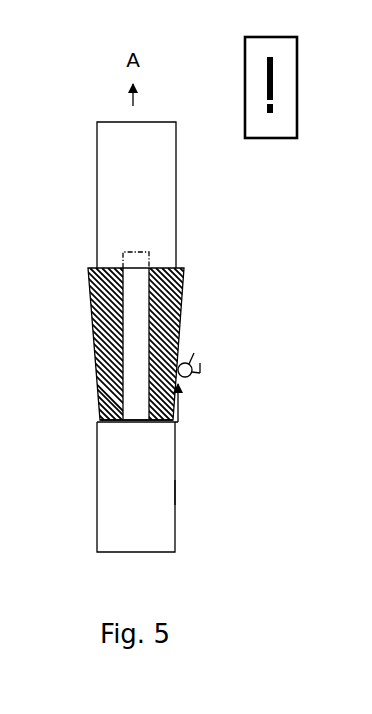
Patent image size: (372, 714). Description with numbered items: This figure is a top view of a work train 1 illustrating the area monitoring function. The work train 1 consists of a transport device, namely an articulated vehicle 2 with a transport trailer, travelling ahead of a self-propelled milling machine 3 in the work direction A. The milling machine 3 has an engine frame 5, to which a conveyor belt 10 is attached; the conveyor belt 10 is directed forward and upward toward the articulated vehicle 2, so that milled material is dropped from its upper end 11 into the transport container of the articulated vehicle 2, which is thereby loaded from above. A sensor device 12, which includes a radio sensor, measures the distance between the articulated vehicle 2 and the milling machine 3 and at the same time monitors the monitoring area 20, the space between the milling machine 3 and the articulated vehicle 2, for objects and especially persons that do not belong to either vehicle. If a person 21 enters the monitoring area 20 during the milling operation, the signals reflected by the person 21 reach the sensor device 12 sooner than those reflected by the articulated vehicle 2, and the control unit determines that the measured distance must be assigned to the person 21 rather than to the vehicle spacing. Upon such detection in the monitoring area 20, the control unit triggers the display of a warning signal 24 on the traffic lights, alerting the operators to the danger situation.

The work train 1 is at (207, 331).
The articulated vehicle 2 is at (185, 177).
The milling machine 3 is at (86, 521).
The engine frame 5 is at (176, 492).
The conveyor belt 10 is at (132, 400).
The upper end of the conveyor belt 11 is at (123, 250).
The sensor device 12 is at (101, 418).
The monitoring area 20 is at (92, 333).
The person 21 is at (200, 374).
The warning signal 24 is at (280, 125).